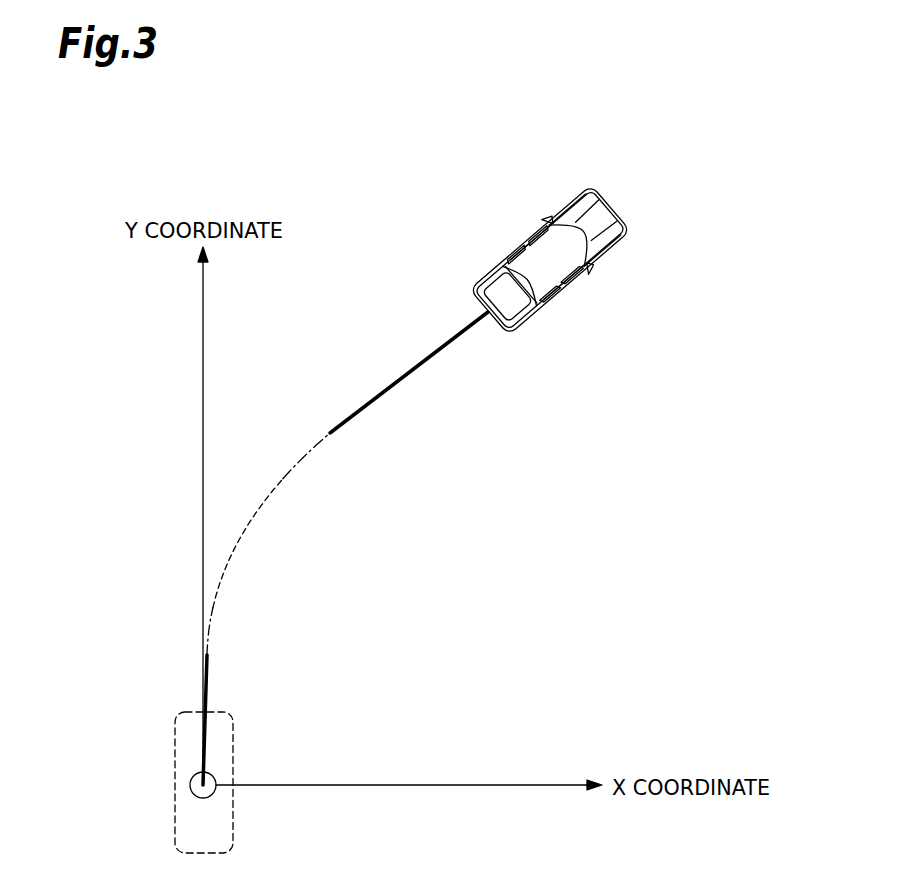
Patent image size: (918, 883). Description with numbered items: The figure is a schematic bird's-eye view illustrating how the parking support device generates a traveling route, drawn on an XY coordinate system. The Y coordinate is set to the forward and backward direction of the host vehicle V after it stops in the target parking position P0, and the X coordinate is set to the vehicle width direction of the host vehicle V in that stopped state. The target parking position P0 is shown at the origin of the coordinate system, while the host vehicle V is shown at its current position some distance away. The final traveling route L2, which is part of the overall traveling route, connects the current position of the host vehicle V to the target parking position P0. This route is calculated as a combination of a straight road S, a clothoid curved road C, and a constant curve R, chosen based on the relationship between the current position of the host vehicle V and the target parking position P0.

The host vehicle V is at (632, 221).
The final traveling route L2 is at (345, 548).
The straight road S is at (413, 370).
The clothoid curved road C is at (283, 473).
The constant curve R is at (233, 550).
The target parking position P0 is at (175, 822).